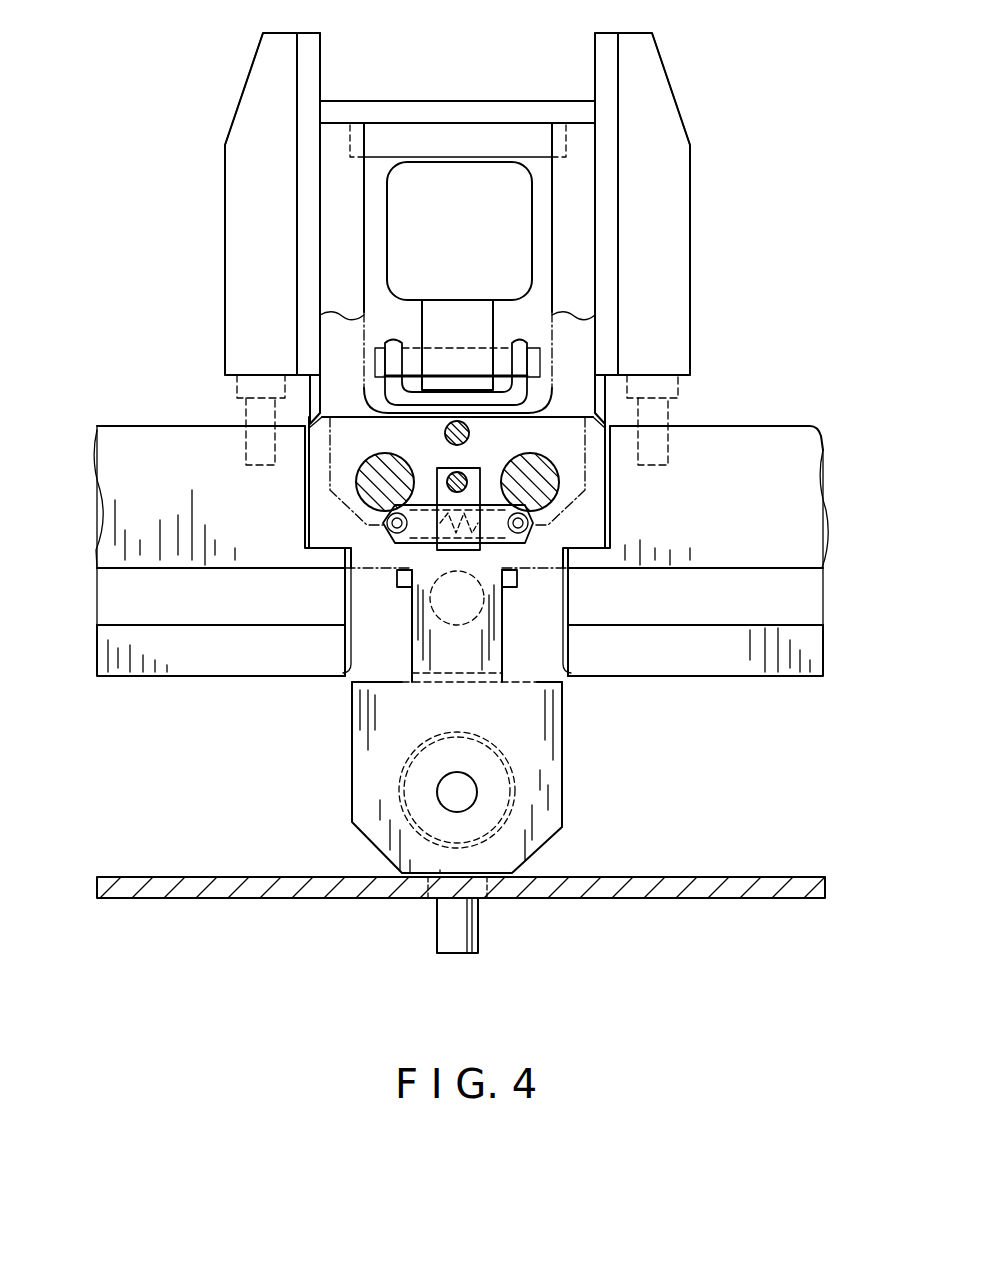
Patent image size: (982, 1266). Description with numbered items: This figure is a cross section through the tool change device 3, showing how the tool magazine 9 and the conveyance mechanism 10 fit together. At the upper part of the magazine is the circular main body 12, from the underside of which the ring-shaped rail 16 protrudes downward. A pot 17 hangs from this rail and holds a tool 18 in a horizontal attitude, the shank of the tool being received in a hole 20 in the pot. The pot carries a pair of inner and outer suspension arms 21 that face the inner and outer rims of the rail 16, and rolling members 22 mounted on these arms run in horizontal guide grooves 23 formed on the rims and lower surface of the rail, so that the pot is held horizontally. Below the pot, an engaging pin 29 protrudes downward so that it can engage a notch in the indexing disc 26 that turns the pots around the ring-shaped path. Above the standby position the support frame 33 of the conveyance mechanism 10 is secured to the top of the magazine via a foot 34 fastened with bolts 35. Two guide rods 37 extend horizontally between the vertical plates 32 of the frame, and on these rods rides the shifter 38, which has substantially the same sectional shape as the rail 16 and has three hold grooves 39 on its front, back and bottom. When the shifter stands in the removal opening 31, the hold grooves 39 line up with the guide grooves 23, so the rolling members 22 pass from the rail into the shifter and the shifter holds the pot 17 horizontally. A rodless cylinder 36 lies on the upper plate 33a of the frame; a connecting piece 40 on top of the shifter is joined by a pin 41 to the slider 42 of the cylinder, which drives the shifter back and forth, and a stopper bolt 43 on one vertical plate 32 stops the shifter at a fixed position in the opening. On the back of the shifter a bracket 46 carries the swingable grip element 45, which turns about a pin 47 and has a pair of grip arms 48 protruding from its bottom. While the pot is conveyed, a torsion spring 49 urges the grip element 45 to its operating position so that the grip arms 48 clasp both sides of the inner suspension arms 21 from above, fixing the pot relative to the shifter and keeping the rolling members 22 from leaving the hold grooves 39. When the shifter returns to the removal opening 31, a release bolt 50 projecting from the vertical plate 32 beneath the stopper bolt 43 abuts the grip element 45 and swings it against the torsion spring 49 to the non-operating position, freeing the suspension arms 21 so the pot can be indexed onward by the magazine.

The tool change device 3 is at (170, 142).
The tool magazine 9 is at (735, 420).
The conveyance mechanism 10 is at (700, 140).
The main body 12 is at (803, 535).
The rail 16 is at (755, 662).
The pot 17 is at (352, 795).
The tool 18 is at (470, 792).
The hole 20 is at (410, 755).
The suspension arm 21 is at (563, 702).
The rolling member 22 is at (485, 597).
The guide groove 23 is at (185, 620).
The indexing disc 26 is at (240, 900).
The engaging pin 29 is at (480, 945).
The removal opening 31 is at (375, 688).
The vertical plate 32 is at (343, 194).
The support frame 33 is at (228, 226).
The upper plate 33a is at (376, 108).
The foot 34 is at (262, 375).
The bolt 35 is at (247, 412).
The rodless cylinder 36 is at (520, 205).
The guide rod 37 is at (357, 478).
The shifter 38 is at (565, 453).
The hold groove 39 is at (568, 640).
The connecting piece 40 is at (545, 312).
The pin 41 is at (545, 360).
The slider 42 is at (455, 310).
The stopper bolt 43 is at (440, 418).
The grip element 45 is at (530, 538).
The bracket 46 is at (400, 552).
The pin 47 is at (410, 537).
The grip arm 48 is at (410, 578).
The torsion spring 49 is at (433, 437).
The release bolt 50 is at (468, 470).